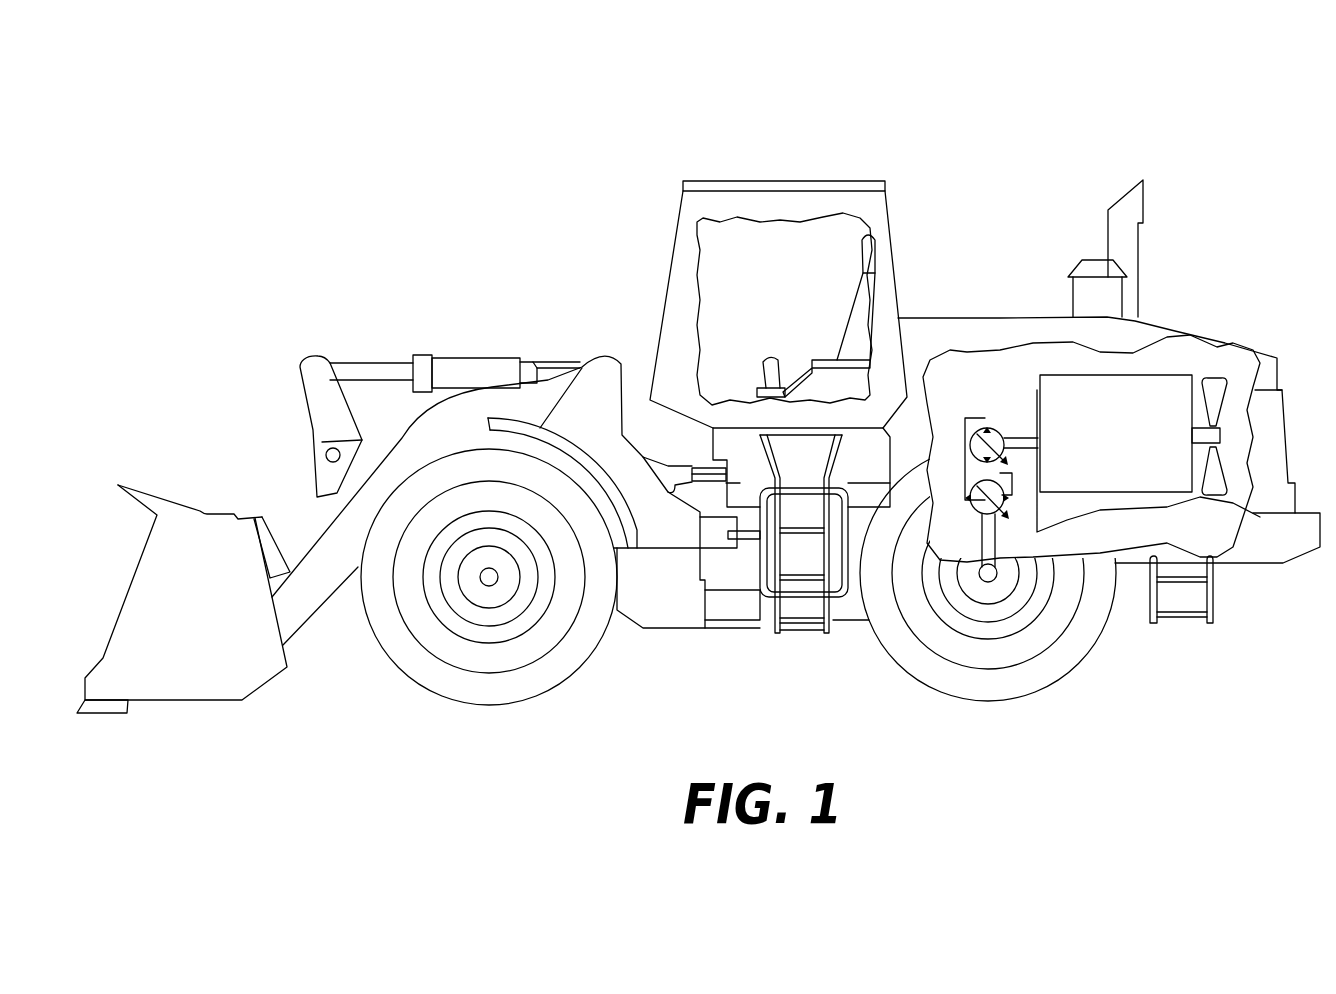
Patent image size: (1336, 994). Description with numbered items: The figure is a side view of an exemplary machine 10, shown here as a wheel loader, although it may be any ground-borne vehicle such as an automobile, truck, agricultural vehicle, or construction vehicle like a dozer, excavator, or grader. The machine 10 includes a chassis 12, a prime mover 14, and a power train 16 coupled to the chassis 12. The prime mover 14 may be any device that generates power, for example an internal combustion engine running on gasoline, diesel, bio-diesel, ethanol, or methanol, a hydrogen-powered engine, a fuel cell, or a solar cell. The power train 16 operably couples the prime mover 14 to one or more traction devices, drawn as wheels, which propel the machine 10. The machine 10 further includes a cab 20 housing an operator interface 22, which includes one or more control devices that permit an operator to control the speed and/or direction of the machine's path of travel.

The machine 10 is at (1033, 77).
The chassis 12 is at (680, 613).
The prime mover 14 is at (1131, 441).
The power train 16 is at (985, 386).
The cab 20 is at (813, 207).
The operator interface 22 is at (770, 340).